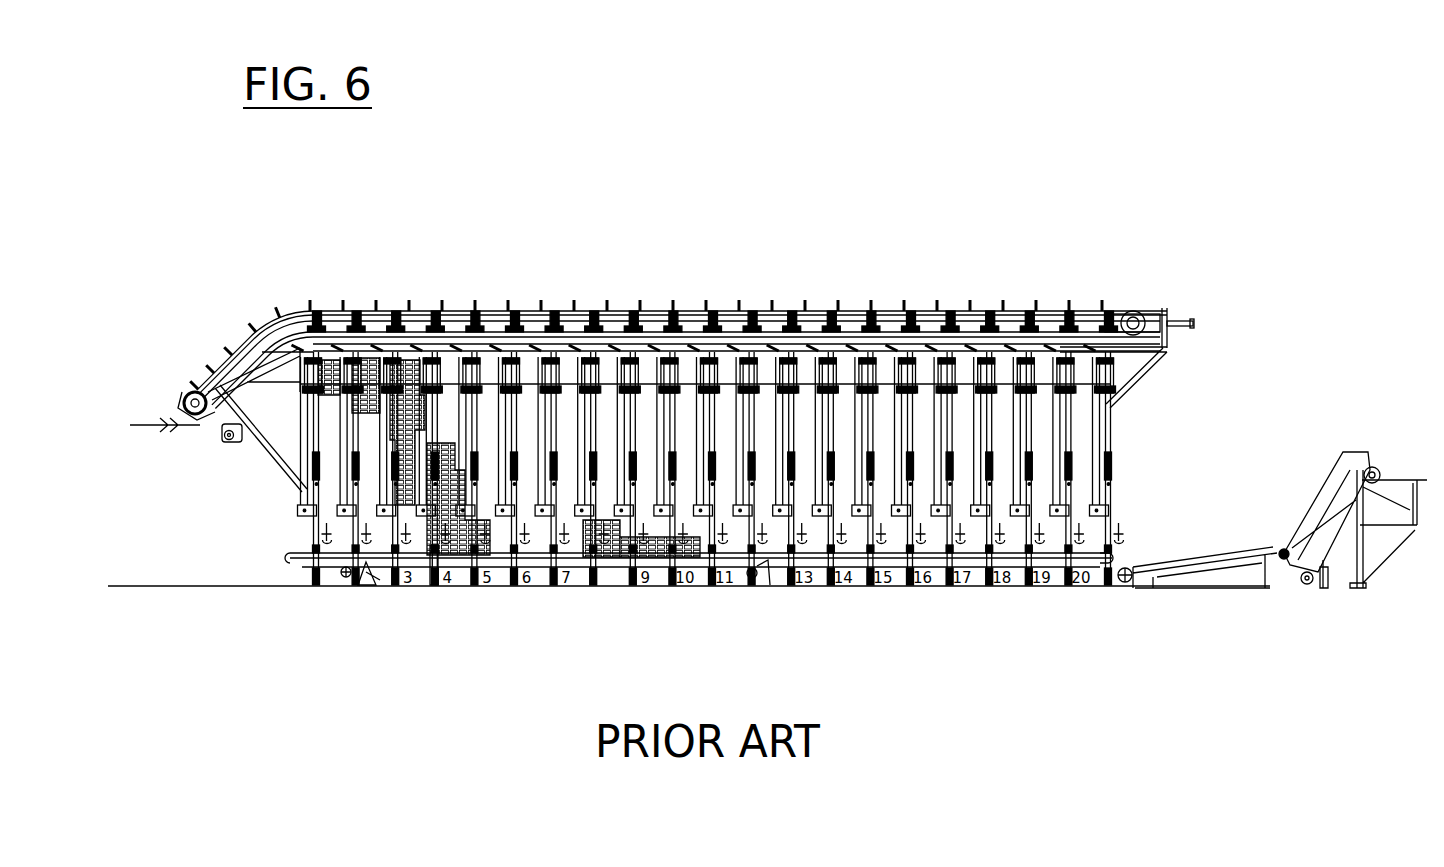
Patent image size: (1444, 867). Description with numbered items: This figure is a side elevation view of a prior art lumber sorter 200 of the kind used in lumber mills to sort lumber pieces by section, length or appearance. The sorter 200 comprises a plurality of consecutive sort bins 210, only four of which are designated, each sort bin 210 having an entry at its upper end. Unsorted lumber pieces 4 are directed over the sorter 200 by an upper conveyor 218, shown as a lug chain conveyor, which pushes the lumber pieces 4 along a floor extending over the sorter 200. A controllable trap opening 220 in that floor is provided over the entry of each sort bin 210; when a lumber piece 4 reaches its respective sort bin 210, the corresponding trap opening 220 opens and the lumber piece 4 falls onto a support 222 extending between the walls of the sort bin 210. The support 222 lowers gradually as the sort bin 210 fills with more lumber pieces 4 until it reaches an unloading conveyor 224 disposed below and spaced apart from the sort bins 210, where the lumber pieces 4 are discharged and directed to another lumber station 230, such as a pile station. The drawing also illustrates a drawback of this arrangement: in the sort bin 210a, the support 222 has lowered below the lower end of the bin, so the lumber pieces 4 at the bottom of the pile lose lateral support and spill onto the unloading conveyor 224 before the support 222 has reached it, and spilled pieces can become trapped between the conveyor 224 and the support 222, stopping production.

The sorter 200 is at (677, 404).
The upper conveyor 218 is at (592, 308).
The controllable trap opening 220 is at (388, 340).
The support 222 is at (305, 398).
The lumber pieces 4 is at (446, 364).
The sort bins 210 is at (326, 497).
The sort bin 210a is at (450, 557).
The unloading conveyor 224 is at (287, 562).
The lumber station 230 is at (1323, 433).